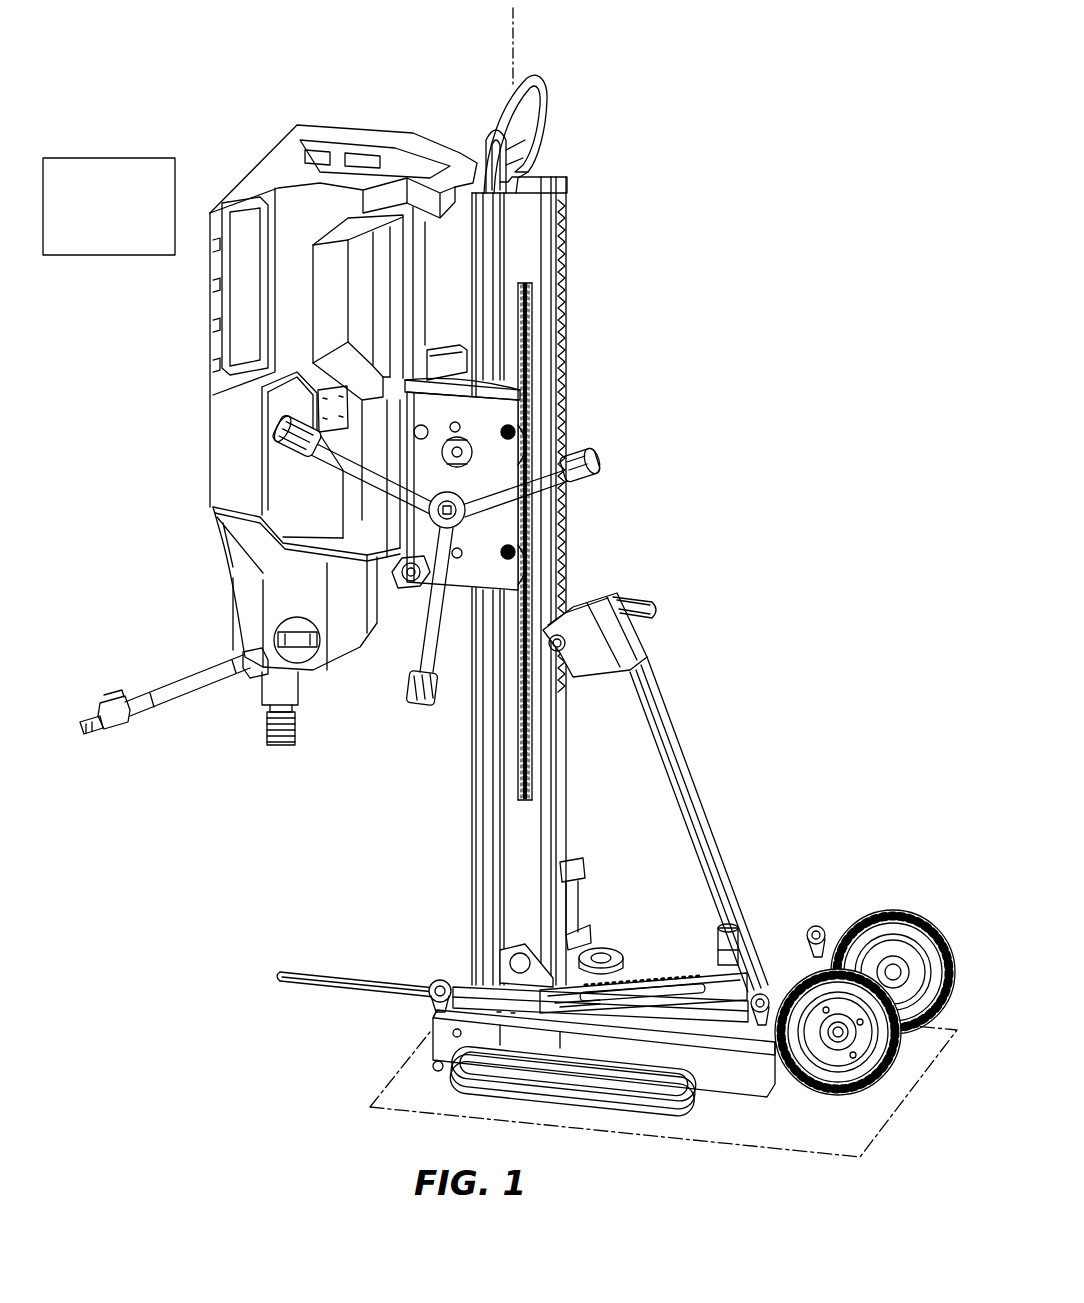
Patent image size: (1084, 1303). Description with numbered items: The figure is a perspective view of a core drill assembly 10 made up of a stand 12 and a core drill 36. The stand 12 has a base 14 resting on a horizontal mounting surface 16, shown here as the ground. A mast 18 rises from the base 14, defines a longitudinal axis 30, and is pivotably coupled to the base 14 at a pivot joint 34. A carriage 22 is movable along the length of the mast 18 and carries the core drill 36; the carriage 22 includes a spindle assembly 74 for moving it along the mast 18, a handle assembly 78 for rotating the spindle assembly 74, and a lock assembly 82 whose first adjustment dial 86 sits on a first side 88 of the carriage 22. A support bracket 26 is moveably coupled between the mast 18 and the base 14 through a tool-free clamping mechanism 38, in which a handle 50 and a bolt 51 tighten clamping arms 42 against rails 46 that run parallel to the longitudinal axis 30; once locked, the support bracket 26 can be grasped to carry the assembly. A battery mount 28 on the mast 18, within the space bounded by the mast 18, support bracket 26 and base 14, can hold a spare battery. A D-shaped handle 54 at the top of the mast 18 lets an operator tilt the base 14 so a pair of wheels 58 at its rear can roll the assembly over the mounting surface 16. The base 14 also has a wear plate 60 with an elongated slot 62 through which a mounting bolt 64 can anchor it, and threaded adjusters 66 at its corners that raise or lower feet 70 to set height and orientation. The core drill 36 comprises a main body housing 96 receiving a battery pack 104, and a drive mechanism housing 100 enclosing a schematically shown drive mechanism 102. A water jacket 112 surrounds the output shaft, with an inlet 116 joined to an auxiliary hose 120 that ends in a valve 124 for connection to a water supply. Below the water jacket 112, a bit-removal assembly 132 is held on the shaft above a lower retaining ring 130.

The core drill assembly 10 is at (692, 190).
The stand 12 is at (742, 645).
The base 14 is at (733, 1083).
The mounting surface 16 is at (846, 1143).
The mast 18 is at (531, 268).
The carriage 22 is at (497, 473).
The support bracket 26 is at (687, 783).
The battery mount 28 is at (600, 860).
The longitudinal axis 30 is at (512, 45).
The pivot joint 34 is at (513, 965).
The core drill 36 is at (196, 347).
The tool-free clamping mechanism 38 is at (627, 578).
The clamping arms 42 is at (578, 670).
The rails 46 is at (568, 543).
The handle 50 is at (643, 597).
The bolt 51 is at (567, 653).
The handle 54 is at (523, 125).
The wheels 58 is at (888, 902).
The wear plate 60 is at (673, 973).
The elongated slot 62 is at (638, 968).
The mounting bolt 64 is at (621, 950).
The adjusters 66 is at (440, 980).
The feet 70 is at (433, 1067).
The spindle assembly 74 is at (462, 527).
The handle assembly 78 is at (597, 460).
The lock assembly 82 is at (480, 436).
The first adjustment dial 86 is at (458, 447).
The first side 88 is at (500, 408).
The main body housing 96 is at (243, 460).
The drive mechanism housing 100 is at (252, 540).
The drive mechanism 102 is at (333, 297).
The battery pack 104 is at (245, 228).
The water jacket 112 is at (283, 677).
The inlet 116 is at (263, 673).
The auxiliary hose 120 is at (177, 690).
The valve 124 is at (108, 727).
The lower retaining ring 130 is at (280, 712).
The bit-removal assembly 132 is at (292, 627).